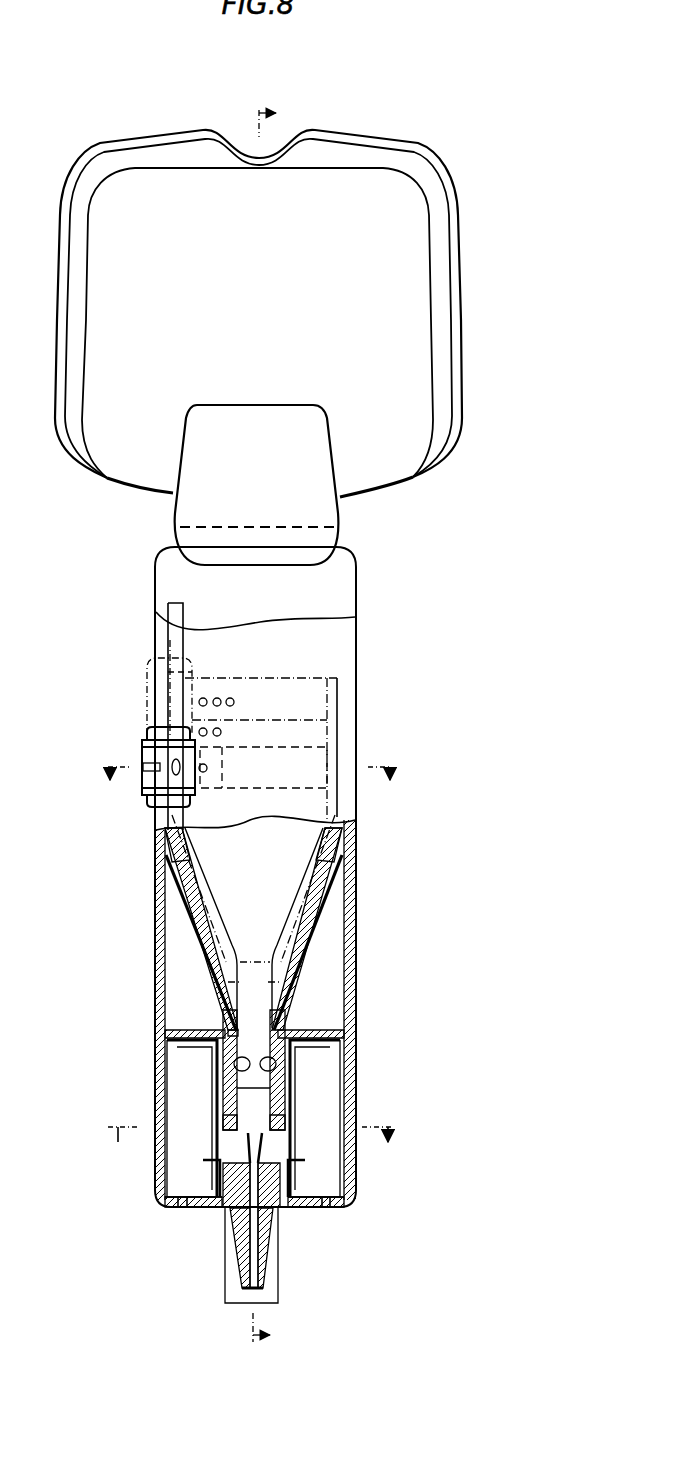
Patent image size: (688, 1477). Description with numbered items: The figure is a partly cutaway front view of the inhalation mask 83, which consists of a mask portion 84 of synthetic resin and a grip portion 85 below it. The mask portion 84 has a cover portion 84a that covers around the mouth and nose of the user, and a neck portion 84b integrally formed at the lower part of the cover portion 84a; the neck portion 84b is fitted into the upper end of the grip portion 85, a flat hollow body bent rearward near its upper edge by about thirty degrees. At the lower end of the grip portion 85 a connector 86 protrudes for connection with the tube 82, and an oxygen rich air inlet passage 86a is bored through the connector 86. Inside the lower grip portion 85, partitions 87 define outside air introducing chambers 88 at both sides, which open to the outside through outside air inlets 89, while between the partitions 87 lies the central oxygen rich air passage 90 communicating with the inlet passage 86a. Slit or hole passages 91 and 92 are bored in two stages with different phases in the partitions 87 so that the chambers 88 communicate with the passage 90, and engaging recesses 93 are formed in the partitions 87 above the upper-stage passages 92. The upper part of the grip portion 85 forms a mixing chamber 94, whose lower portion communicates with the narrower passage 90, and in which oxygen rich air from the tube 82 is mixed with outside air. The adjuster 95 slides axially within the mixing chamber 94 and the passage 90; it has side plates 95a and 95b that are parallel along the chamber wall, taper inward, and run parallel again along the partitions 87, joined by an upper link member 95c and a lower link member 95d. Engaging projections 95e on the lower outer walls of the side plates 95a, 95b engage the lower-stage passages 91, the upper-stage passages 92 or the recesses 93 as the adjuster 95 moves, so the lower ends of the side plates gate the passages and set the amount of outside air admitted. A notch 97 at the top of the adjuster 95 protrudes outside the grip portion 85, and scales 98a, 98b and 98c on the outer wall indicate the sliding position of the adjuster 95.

The tube 82 is at (274, 1296).
The inhalation mask 83 is at (278, 85).
The mask portion 84 is at (468, 260).
The cover portion 84a is at (461, 332).
The neck portion 84b is at (341, 515).
The grip portion 85 is at (364, 927).
The connector 86 is at (272, 1223).
The oxygen rich air inlet passage 86a is at (258, 1277).
The partitions 87 is at (212, 1150).
The outside air introducing chambers 88 is at (162, 1207).
The outside air inlets 89 is at (186, 1208).
The oxygen rich air passage 90 is at (222, 1207).
The lower-stage passages 91 is at (225, 1130).
The upper-stage passages 92 is at (222, 1073).
The engaging recesses 93 is at (172, 1042).
The mixing chamber 94 is at (328, 982).
The adjuster 95 is at (166, 907).
The side plate 95a is at (168, 858).
The side plate 95b is at (346, 850).
The upper link member 95c is at (313, 757).
The lower link member 95d is at (227, 1032).
The engaging projections 95e is at (222, 1110).
The notch 97 is at (147, 730).
The scale 98a is at (207, 768).
The scale 98b is at (221, 731).
The scale 98c is at (230, 698).